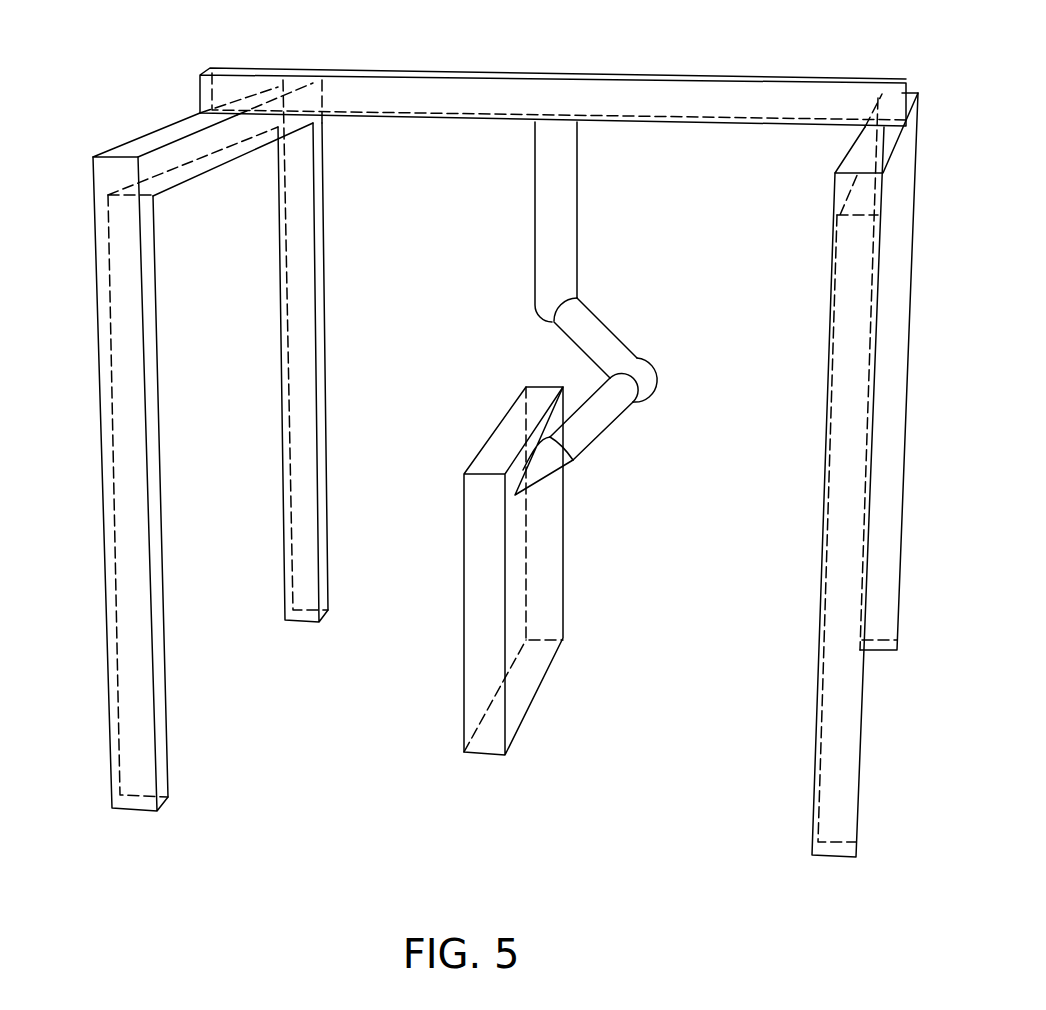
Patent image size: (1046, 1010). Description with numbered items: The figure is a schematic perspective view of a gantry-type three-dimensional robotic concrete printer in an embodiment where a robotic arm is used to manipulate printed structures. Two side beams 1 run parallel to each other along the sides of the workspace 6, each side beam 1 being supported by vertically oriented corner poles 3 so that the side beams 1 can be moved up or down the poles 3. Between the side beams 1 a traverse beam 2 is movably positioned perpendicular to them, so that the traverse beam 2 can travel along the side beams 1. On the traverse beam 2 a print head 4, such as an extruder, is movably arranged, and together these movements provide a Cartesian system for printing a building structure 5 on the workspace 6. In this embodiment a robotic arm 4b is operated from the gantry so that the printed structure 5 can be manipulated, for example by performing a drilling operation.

The side beam 1 is at (163, 135).
The traverse beam 2 is at (390, 88).
The corner pole 3 is at (133, 475).
The print head 4 is at (578, 203).
The robotic arm 4b is at (545, 469).
The building structure 5 is at (525, 690).
The workspace 6 is at (440, 778).